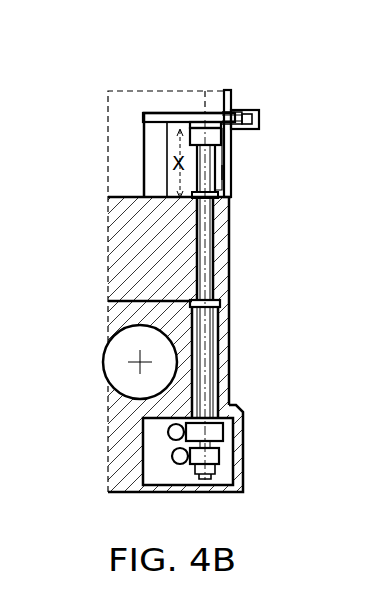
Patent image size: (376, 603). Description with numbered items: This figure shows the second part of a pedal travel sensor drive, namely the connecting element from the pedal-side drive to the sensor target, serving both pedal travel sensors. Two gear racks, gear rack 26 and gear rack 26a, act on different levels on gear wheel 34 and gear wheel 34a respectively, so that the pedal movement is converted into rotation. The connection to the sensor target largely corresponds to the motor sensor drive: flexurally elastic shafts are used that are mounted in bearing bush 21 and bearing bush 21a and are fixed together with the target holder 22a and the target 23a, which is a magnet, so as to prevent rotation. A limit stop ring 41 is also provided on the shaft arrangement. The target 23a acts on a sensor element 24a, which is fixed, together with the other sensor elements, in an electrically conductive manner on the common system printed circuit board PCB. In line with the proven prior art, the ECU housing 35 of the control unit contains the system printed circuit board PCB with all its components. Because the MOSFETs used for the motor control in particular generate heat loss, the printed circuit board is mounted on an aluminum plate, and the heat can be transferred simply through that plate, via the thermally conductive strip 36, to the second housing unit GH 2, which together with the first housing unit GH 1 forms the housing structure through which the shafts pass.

The system printed circuit board PCB is at (150, 112).
The ECU housing 35 is at (207, 114).
The sensor element 24a is at (219, 112).
The target (magnet) 23a is at (233, 130).
The target holder 22a is at (233, 142).
The thermally conductive strip 36 is at (155, 138).
The limit stop ring 41 is at (175, 180).
The bearing bush 21a is at (227, 213).
The second housing unit GH 2 is at (225, 267).
The first housing unit GH 1 is at (225, 350).
The bearing bush 21 is at (222, 292).
The gear rack 1 26 is at (165, 428).
The gear rack 2 26a is at (167, 452).
The gear wheel 1 34 is at (223, 428).
The gear wheel 2 34a is at (223, 458).